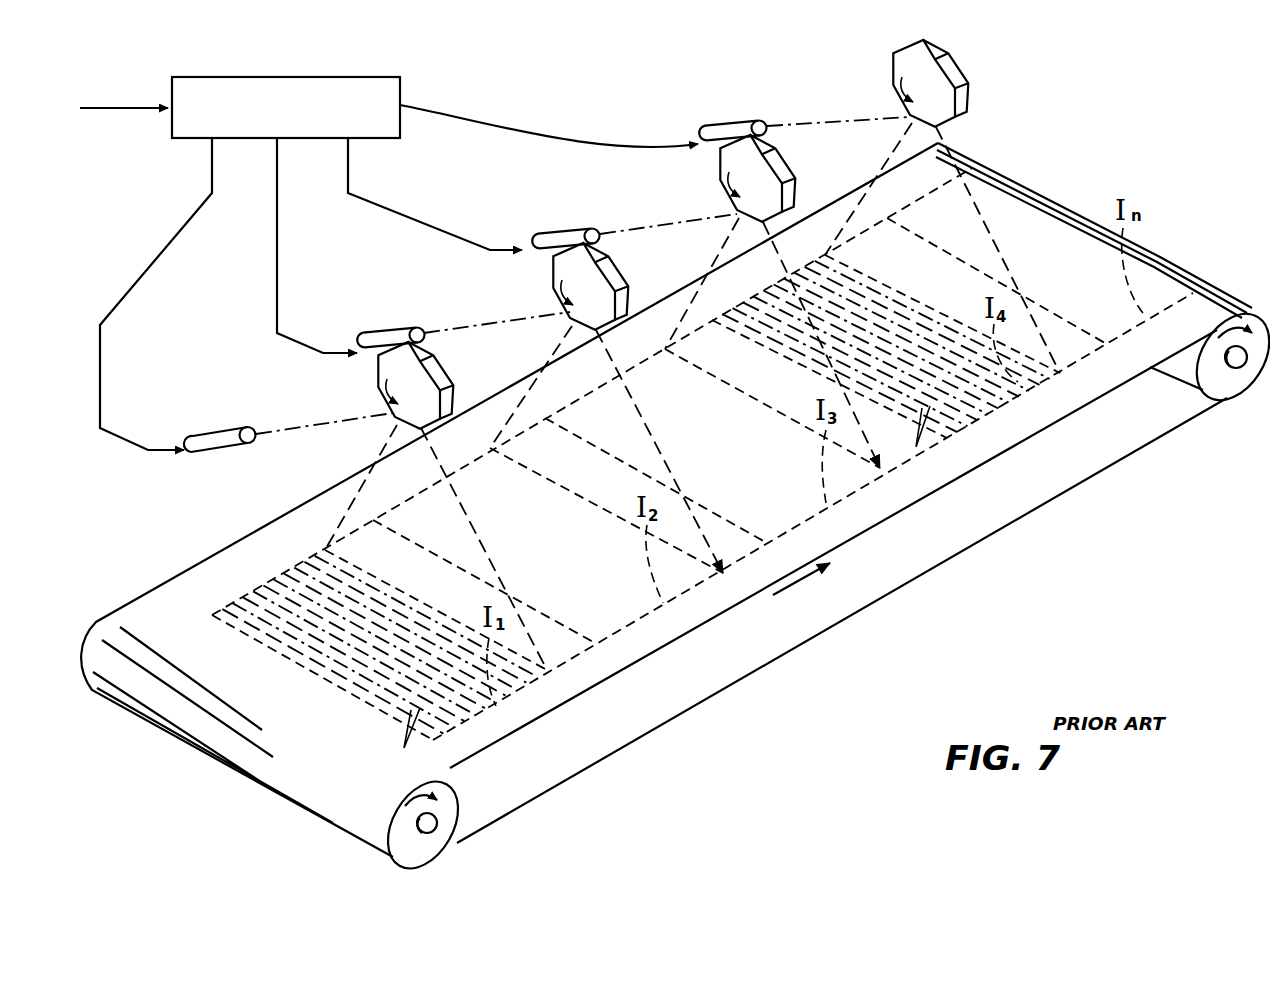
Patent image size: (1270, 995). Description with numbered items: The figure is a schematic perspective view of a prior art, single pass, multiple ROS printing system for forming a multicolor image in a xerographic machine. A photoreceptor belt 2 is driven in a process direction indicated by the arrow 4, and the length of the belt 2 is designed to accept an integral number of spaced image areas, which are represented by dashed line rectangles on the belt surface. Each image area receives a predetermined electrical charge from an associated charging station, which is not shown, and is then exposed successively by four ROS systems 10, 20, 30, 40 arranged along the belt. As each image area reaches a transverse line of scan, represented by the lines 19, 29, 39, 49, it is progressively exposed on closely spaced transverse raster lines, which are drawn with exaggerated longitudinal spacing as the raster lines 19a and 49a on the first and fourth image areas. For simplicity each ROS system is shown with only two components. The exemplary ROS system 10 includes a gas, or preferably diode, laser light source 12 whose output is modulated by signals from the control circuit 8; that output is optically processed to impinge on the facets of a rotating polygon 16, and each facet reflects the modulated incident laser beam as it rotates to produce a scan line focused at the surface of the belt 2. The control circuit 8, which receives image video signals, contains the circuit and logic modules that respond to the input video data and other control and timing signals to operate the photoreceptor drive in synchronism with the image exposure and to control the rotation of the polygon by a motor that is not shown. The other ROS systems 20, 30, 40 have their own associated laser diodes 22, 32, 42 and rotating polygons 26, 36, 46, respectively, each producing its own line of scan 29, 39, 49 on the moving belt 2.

The photoreceptor belt 2 is at (1003, 453).
The arrow 4 is at (800, 580).
The control circuit 8 is at (390, 88).
The ROS system 10 is at (280, 375).
The laser light source 12 is at (222, 432).
The rotating polygon 16 is at (376, 345).
The line of scan 19 is at (442, 612).
The raster lines 19a is at (410, 739).
The ROS system 20 is at (463, 278).
The laser light source 22 is at (412, 327).
The rotating polygon 26 is at (565, 240).
The line of scan 29 is at (606, 509).
The ROS system 30 is at (660, 197).
The laser light source 32 is at (586, 228).
The rotating polygon 36 is at (718, 142).
The line of scan 39 is at (781, 412).
The ROS system 40 is at (850, 92).
The laser light source 42 is at (751, 118).
The rotating polygon 46 is at (915, 43).
The line of scan 49 is at (960, 320).
The raster lines 49a is at (918, 440).